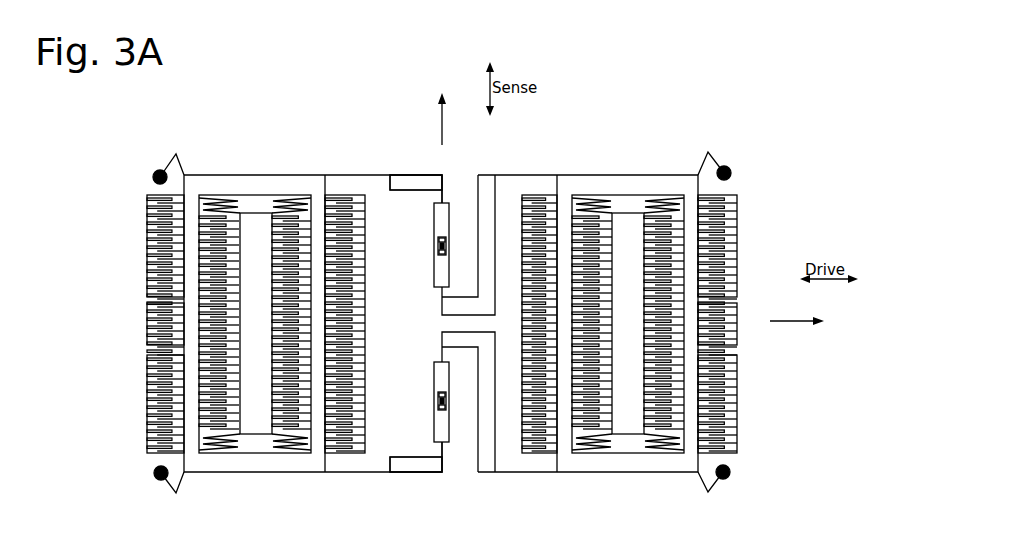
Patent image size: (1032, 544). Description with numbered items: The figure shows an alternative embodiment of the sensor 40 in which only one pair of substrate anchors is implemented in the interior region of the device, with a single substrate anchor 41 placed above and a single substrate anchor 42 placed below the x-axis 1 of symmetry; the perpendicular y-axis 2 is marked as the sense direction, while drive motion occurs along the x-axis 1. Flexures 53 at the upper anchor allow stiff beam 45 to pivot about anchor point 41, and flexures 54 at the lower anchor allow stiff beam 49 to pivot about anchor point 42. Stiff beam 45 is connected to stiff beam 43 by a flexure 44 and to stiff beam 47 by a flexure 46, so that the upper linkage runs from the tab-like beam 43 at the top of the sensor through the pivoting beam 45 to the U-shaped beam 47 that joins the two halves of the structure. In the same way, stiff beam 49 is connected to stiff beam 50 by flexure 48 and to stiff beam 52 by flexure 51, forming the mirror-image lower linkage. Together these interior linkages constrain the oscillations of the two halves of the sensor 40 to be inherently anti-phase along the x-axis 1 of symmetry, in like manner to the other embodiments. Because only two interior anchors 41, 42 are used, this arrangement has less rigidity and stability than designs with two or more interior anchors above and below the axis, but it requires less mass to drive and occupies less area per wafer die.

The x-axis of symmetry 1 is at (786, 324).
The y-axis 2 is at (441, 126).
The sensor 40 is at (197, 142).
The substrate anchor 41 is at (446, 243).
The substrate anchor 42 is at (446, 400).
The stiff beam 43 is at (423, 174).
The flexure 44 is at (438, 202).
The stiff beam 45 is at (443, 217).
The flexure 46 is at (440, 296).
The stiff beam 47 is at (483, 267).
The flexure 48 is at (441, 352).
The stiff beam 49 is at (444, 424).
The stiff beam 50 is at (483, 396).
The flexure 51 is at (440, 445).
The stiff beam 52 is at (430, 466).
The flexures 53 is at (440, 241).
The flexures 54 is at (440, 398).